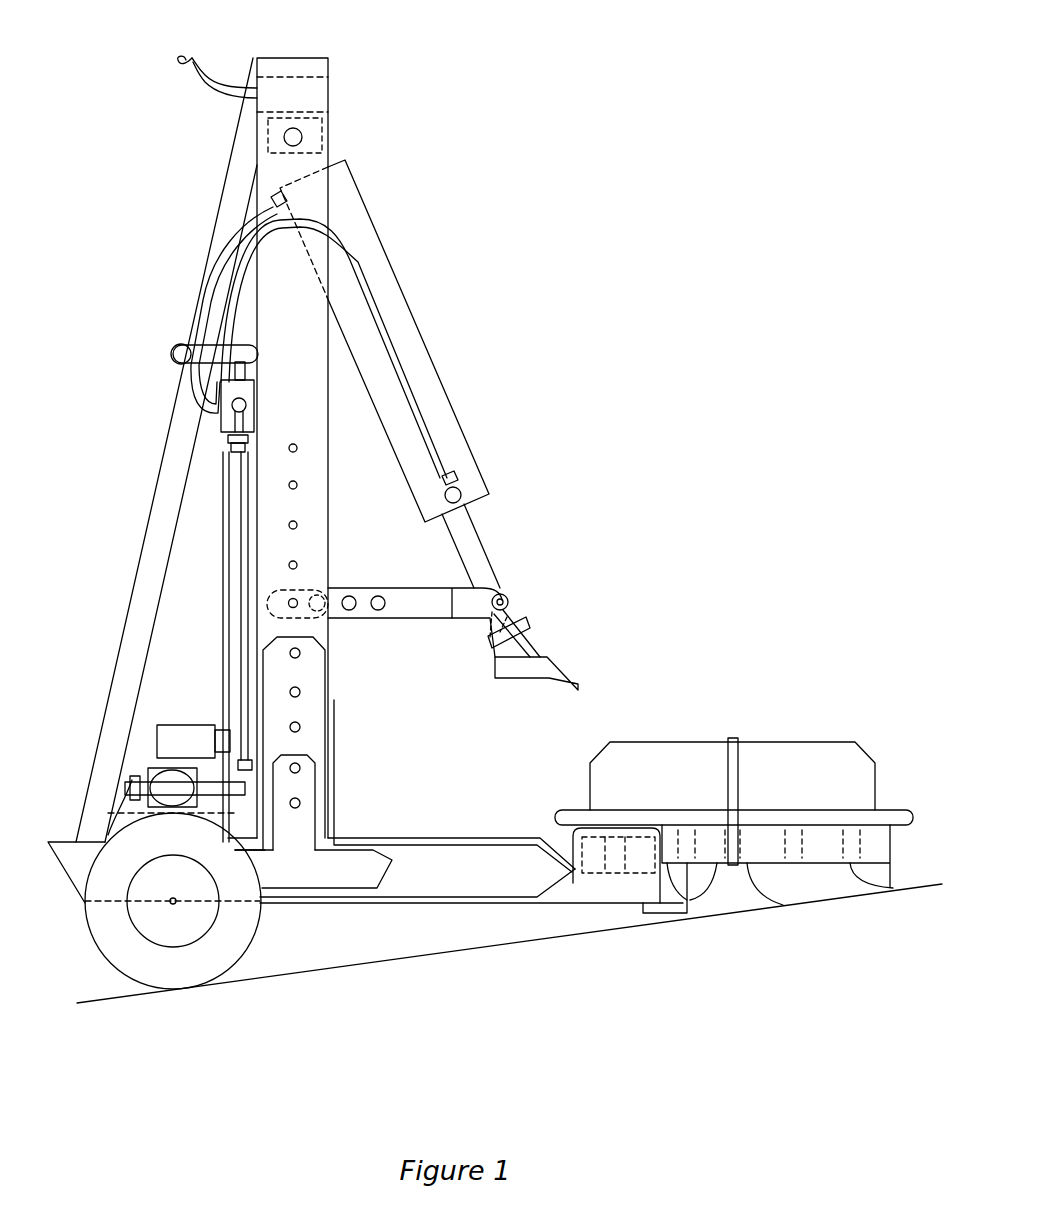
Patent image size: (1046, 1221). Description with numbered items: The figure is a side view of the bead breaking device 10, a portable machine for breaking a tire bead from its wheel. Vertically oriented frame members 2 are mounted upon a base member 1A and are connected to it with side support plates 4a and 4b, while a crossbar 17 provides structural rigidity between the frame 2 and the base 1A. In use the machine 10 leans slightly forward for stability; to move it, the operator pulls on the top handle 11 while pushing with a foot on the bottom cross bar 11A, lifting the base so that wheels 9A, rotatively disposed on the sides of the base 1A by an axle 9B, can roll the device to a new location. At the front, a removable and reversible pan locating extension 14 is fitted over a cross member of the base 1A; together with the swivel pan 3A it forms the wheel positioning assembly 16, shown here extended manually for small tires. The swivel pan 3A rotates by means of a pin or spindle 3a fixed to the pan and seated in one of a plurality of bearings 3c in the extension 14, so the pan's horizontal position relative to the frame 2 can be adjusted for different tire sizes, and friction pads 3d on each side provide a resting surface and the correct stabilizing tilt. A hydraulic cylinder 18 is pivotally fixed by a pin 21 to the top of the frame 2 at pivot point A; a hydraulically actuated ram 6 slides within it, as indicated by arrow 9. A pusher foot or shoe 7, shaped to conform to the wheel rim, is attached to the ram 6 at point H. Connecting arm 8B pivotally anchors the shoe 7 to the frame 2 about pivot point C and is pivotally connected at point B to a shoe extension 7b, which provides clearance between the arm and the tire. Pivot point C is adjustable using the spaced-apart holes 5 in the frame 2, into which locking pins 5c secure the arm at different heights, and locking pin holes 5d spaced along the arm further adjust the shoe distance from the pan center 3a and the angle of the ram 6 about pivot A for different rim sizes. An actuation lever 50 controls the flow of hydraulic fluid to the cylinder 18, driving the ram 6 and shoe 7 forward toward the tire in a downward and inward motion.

The bead breaking device 10 is at (700, 345).
The frame members 2 is at (312, 467).
The pivot point A is at (294, 128).
The spaced-apart holes 5 is at (294, 563).
The pivot points C is at (300, 594).
The locking pins 5c is at (297, 608).
The hydraulic cylinder 18 is at (410, 345).
The pin 21 is at (290, 128).
The top handle 11 is at (235, 85).
The crossbar 17 is at (171, 483).
The bottom cross bar 11A is at (62, 840).
The actuation lever 50 is at (185, 343).
The wheels 9A is at (235, 963).
The axle 9B is at (178, 901).
The side support plate 4a is at (300, 708).
The side support plate 4b is at (298, 782).
The pan locating extension 14 is at (892, 843).
The base member 1A is at (605, 891).
The friction pads 3d is at (678, 913).
The bearings 3c is at (848, 855).
The swivel pan 3A is at (574, 810).
The wheel positioning assembly 16 is at (790, 715).
The pin or spindle 3a is at (727, 753).
The connecting arm 8B is at (463, 618).
The locking pin holes 5d is at (417, 611).
The arrow 9 is at (440, 528).
The hydraulically actuated ram 6 is at (478, 551).
The points B is at (503, 593).
The shoe extensions 7b is at (510, 604).
The point H is at (528, 638).
The pusher foot or shoe 7 is at (567, 678).